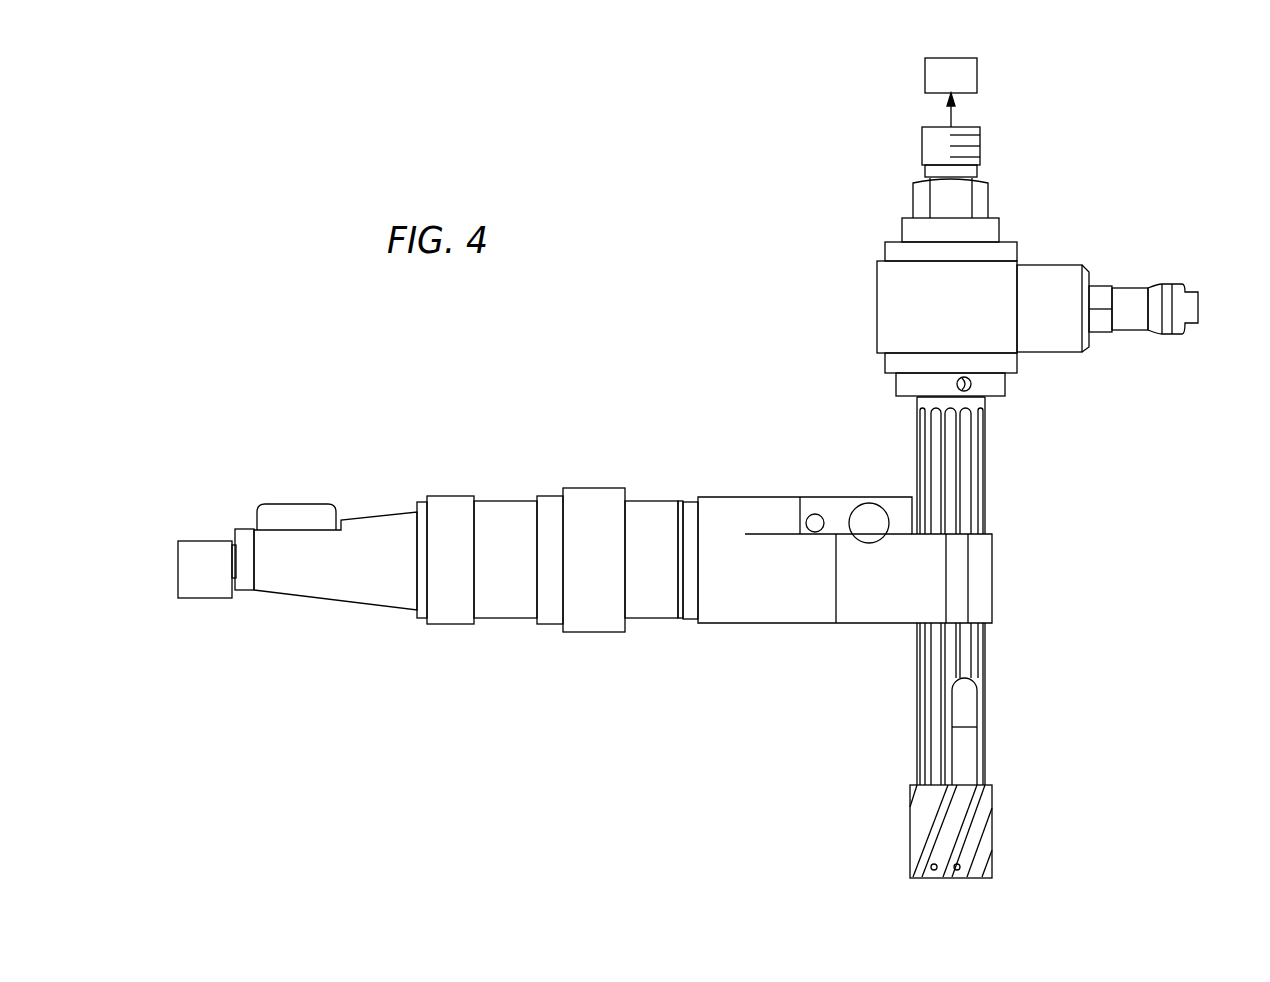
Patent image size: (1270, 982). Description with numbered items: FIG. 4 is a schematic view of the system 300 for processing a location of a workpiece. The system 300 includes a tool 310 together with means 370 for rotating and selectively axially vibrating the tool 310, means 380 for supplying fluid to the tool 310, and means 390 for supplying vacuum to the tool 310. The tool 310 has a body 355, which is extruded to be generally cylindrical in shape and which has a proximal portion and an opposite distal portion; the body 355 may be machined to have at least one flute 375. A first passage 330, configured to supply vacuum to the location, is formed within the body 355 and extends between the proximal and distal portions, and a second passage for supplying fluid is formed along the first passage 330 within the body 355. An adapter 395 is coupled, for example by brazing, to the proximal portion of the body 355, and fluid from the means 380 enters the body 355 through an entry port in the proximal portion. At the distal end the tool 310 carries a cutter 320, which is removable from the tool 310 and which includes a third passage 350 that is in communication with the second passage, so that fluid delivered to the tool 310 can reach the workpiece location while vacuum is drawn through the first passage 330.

The system 300 is at (497, 724).
The tool 310 is at (1042, 637).
The cutter 320 is at (1062, 786).
The first passage 330 is at (966, 710).
The third passage 350 is at (930, 867).
The body 355 is at (1062, 397).
The means for rotating and selectively axially vibrating the tool 370 is at (752, 478).
The flute 375 is at (933, 479).
The means for supplying fluid 380 is at (1049, 246).
The means for supplying vacuum 390 is at (969, 86).
The adapter 395 is at (878, 193).